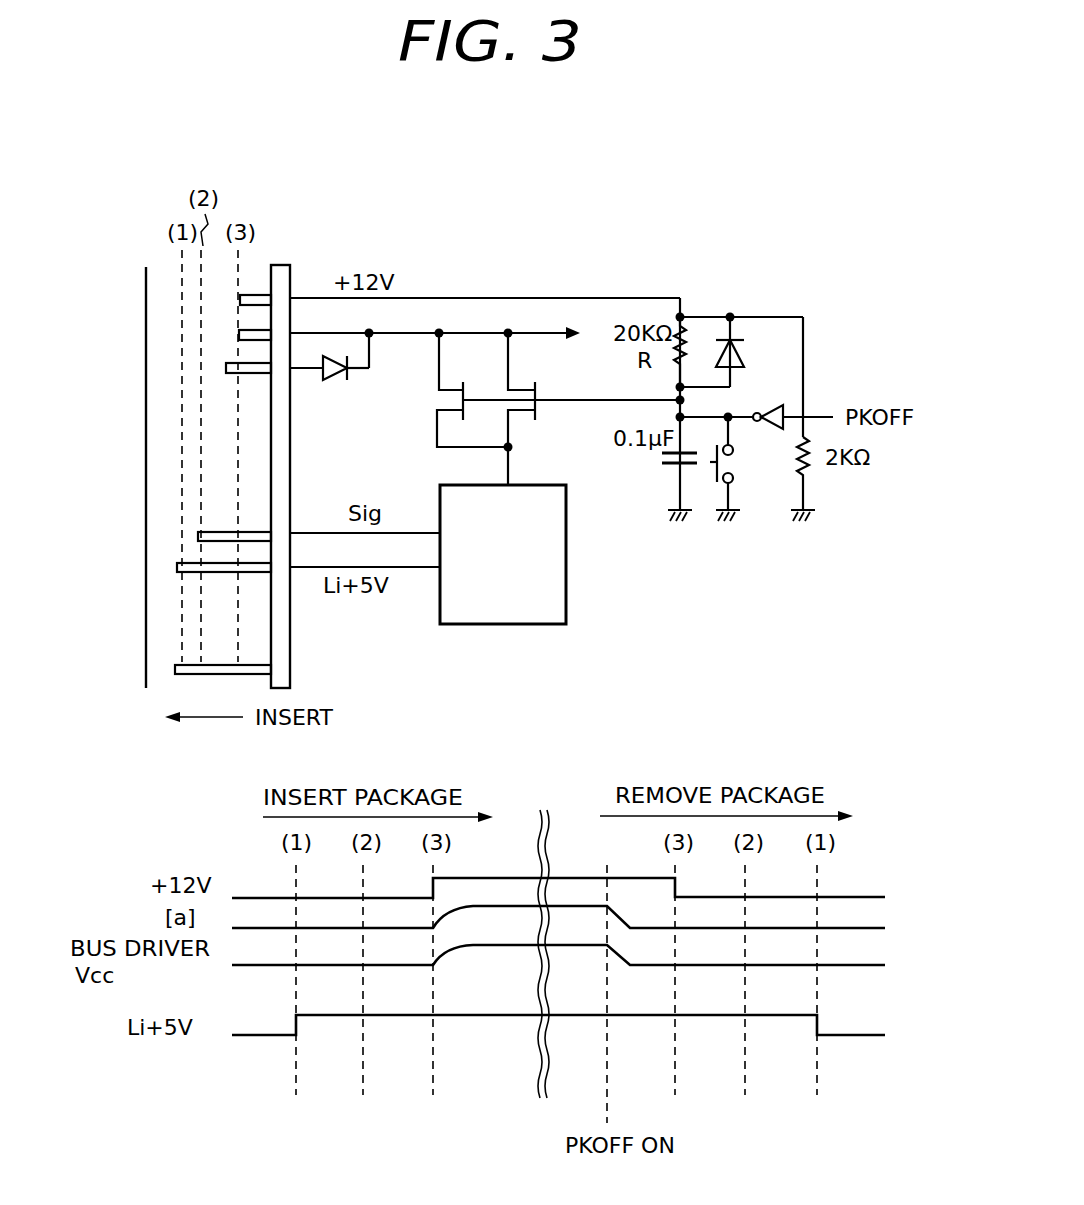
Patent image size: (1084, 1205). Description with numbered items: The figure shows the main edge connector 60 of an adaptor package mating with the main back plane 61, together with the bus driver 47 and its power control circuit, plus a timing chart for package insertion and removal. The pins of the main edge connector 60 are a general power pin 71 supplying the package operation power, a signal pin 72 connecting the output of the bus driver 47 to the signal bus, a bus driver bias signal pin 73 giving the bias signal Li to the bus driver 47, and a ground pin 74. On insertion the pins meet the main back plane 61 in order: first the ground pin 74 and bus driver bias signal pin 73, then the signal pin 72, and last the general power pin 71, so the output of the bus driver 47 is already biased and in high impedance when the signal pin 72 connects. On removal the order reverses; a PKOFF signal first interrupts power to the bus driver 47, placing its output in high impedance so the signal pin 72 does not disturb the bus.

The main back plane 61 is at (147, 284).
The main edge connector 60 is at (291, 283).
The general power pin 71 is at (258, 295).
The signal pin 72 is at (222, 530).
The bus driver bias signal pin 73 is at (253, 563).
The ground pin 74 is at (220, 664).
The bus driver 47 is at (567, 587).